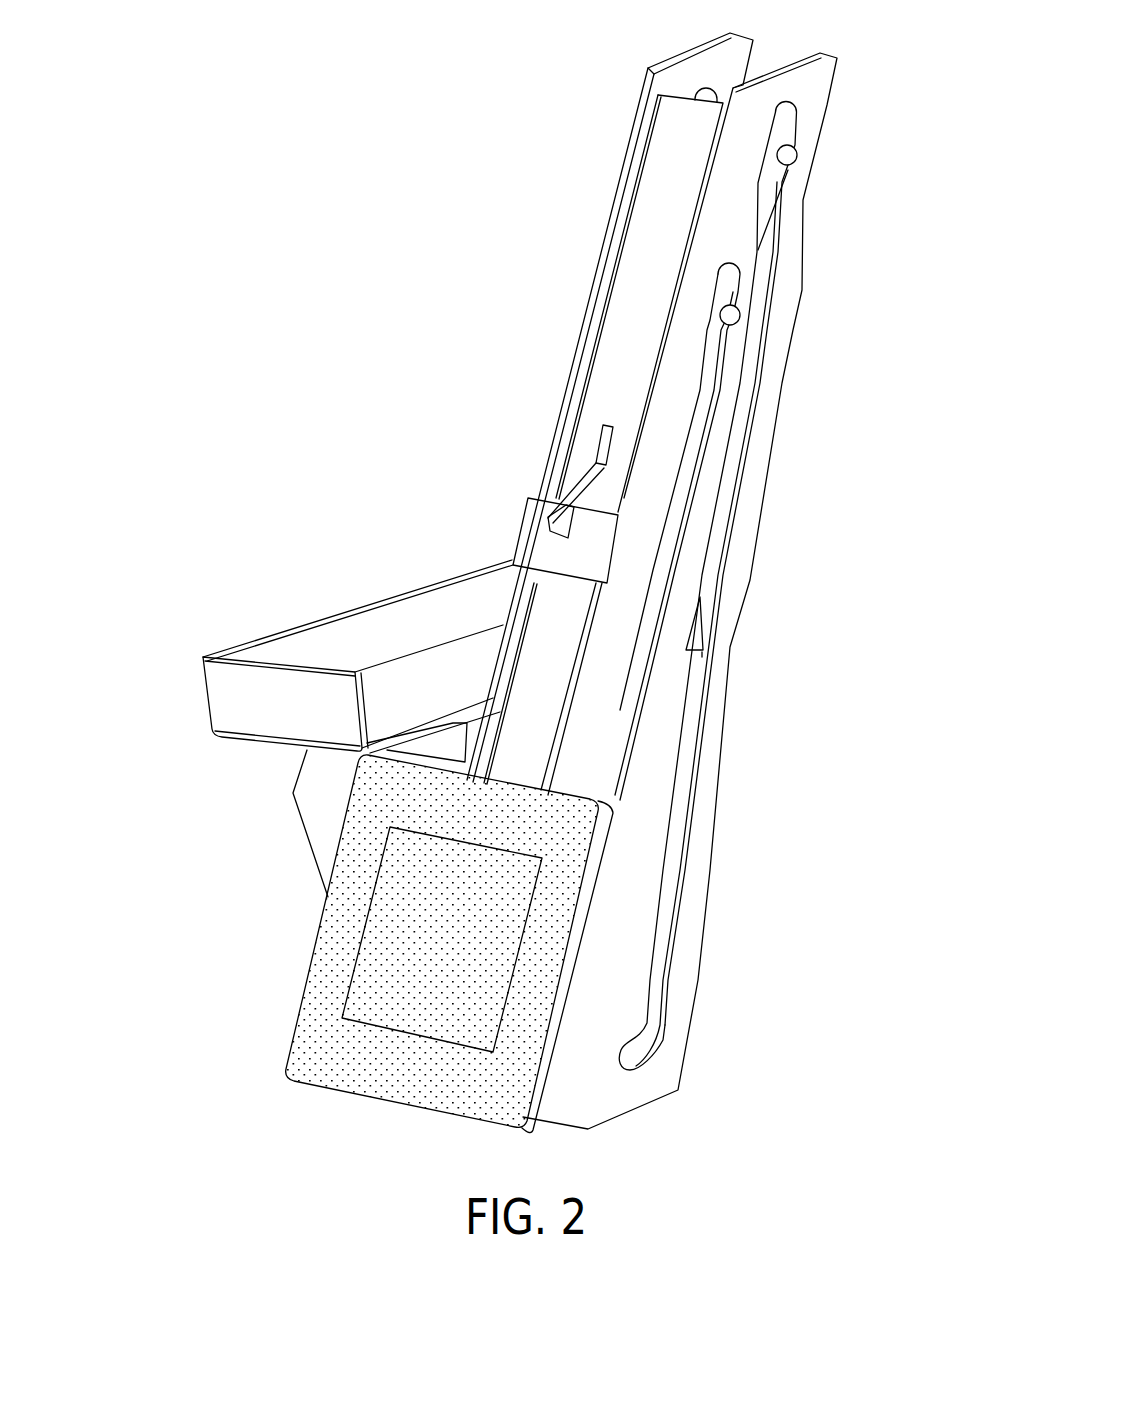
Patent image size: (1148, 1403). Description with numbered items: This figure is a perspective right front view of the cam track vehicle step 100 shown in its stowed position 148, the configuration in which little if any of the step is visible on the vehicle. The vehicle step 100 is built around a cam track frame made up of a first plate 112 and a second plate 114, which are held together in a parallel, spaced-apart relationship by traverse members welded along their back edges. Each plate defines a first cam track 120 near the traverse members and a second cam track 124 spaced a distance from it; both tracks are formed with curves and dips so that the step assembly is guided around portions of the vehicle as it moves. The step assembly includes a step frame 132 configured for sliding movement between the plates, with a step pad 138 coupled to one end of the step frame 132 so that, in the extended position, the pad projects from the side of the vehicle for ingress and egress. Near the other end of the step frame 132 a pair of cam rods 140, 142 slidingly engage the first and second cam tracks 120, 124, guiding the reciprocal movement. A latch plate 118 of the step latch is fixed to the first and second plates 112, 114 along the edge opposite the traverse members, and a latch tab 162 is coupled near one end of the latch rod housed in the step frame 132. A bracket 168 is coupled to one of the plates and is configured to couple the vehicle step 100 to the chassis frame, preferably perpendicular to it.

The vehicle step 100 is at (298, 244).
The first plate 112 is at (688, 45).
The second plate 114 is at (805, 88).
The latch plate 118 is at (532, 553).
The first cam track 120 is at (748, 443).
The second cam track 124 is at (672, 530).
The step frame 132 is at (652, 277).
The step pad 138 is at (372, 985).
The cam rod 140 is at (791, 159).
The cam rod 142 is at (734, 319).
The stowed position 148 is at (171, 858).
The latch tab 162 is at (572, 493).
The bracket 168 is at (323, 790).